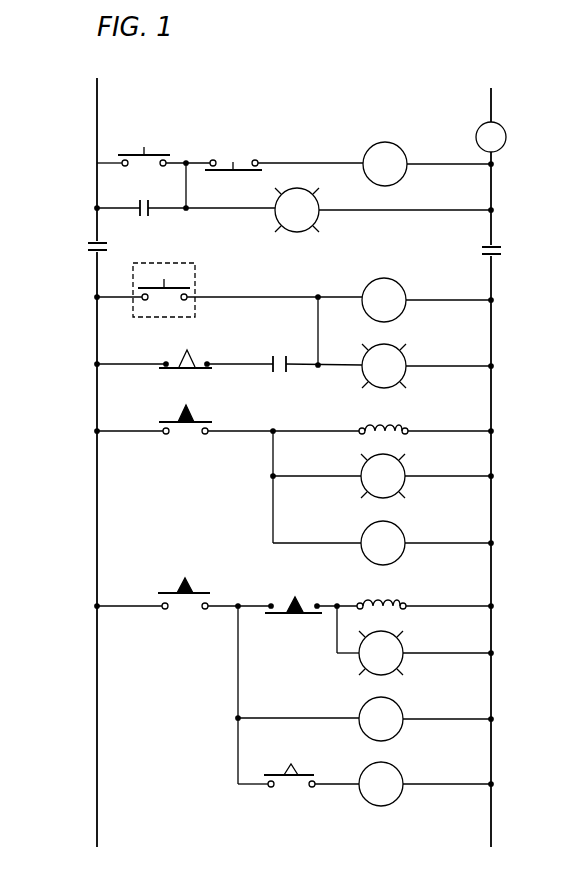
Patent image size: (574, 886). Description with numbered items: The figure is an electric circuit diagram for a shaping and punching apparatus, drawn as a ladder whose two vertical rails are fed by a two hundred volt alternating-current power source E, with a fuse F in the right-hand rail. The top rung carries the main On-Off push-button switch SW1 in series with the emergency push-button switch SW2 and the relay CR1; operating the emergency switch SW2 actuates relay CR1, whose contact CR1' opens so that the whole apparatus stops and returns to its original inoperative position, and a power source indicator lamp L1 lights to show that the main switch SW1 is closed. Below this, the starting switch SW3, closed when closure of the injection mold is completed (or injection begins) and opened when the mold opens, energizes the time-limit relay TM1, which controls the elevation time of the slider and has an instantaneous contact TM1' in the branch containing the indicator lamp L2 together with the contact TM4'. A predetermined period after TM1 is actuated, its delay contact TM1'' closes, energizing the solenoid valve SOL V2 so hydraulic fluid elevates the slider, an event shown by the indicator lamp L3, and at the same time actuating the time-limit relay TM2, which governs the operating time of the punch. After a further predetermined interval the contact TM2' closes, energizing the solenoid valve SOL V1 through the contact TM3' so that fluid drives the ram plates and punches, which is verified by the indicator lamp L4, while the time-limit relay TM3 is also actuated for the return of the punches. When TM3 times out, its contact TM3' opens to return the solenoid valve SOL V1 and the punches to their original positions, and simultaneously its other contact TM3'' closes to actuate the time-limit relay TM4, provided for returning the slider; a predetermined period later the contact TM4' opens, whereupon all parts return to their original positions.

The A.C. power source E is at (491, 95).
The fuse F is at (491, 137).
The main On-Off push-button switch SW1 is at (144, 145).
The emergency push-button switch SW2 is at (233, 153).
The starting switch SW3 is at (187, 281).
The relay CR1 is at (385, 164).
The contact of relay CR1 CR1' is at (287, 220).
The power source indicator lamp L1 is at (297, 210).
The indicator lamp L2 is at (384, 366).
The indicator lamp L3 is at (383, 476).
The indicator lamp L4 is at (381, 653).
The time-limit relay TM1 is at (384, 300).
The instantaneous contact of time-limit relay TM1 TM1' is at (275, 351).
The delay contact of time-limit relay TM1 TM1'' is at (185, 432).
The time-limit relay TM2 is at (383, 543).
The contact of time-limit relay TM2 TM2' is at (184, 584).
The time-limit relay TM3 is at (381, 719).
The contact of time-limit relay TM3 TM3' is at (293, 594).
The contact of time-limit relay TM3 TM3'' is at (289, 789).
The time-limit relay TM4 is at (381, 784).
The contact of time-limit relay TM4 TM4' is at (185, 349).
The solenoid valve SOL V1 is at (383, 593).
The solenoid valve SOL V2 is at (383, 416).